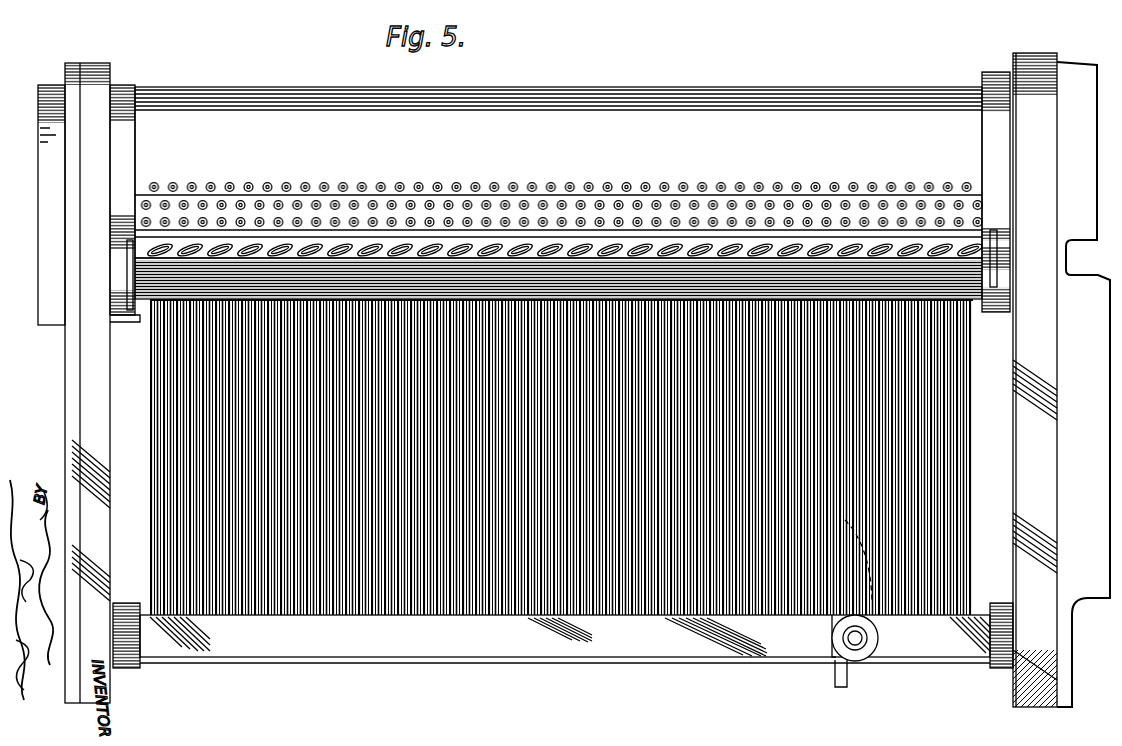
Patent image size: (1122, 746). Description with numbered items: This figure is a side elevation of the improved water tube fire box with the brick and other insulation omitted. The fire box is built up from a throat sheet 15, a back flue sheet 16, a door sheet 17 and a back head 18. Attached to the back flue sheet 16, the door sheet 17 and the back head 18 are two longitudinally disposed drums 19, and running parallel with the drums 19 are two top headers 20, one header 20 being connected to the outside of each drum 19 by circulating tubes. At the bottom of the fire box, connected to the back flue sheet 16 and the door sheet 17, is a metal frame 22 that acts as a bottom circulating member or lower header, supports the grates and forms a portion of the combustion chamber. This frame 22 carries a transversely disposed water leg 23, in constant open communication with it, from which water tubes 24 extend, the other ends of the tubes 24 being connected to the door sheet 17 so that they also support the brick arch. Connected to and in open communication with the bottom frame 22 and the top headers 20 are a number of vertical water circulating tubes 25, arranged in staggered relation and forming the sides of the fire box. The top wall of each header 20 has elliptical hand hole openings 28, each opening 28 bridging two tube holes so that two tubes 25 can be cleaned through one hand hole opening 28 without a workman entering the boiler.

The throat sheet 15 is at (1083, 384).
The back flue sheet 16 is at (1013, 683).
The door sheet 17 is at (105, 512).
The back head 18 is at (72, 441).
The drum 19 is at (561, 172).
The top header 20 is at (620, 272).
The metal frame 22 is at (642, 645).
The water leg 23 is at (838, 658).
The water tube 24 is at (133, 345).
The vertical water circulating tube 25 is at (548, 590).
The hand hole opening 28 is at (330, 254).